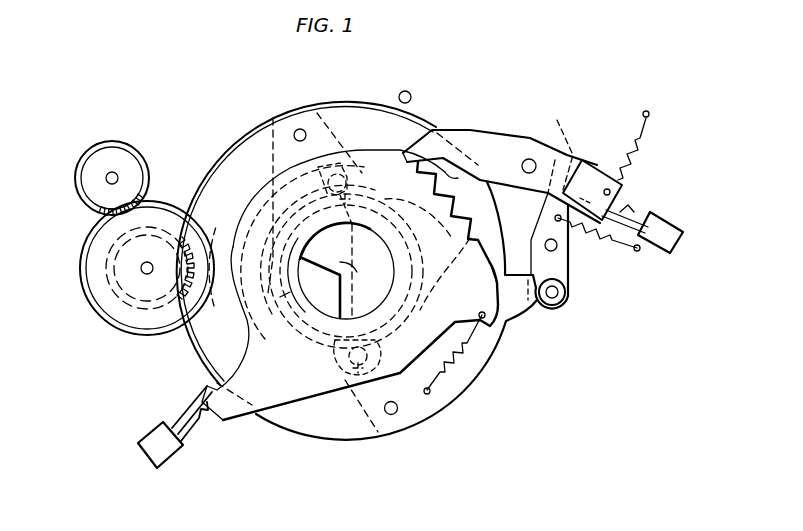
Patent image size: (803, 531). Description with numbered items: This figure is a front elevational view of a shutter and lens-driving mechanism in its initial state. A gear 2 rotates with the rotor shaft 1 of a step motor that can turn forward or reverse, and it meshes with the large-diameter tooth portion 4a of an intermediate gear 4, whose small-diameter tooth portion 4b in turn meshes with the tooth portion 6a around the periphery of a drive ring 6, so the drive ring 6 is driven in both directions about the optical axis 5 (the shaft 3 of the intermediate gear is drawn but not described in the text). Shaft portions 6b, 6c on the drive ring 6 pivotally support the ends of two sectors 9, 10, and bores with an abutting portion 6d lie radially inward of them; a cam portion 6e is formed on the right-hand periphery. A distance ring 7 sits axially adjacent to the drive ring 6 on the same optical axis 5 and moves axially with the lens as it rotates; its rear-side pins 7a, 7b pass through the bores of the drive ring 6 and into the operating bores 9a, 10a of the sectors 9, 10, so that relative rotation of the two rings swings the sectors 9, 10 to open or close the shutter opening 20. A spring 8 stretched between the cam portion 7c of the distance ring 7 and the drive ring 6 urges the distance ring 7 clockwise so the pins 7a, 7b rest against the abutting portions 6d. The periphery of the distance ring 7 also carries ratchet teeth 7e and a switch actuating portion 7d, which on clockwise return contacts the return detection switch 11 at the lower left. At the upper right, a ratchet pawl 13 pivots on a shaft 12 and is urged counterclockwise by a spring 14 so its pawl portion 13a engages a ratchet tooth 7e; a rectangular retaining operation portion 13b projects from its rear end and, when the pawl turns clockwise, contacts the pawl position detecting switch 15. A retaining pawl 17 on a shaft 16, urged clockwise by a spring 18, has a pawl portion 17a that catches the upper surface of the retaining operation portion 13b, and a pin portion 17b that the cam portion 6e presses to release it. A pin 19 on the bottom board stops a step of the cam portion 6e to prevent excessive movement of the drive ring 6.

The rotor shaft 1 is at (108, 175).
The gear 2 is at (133, 150).
The gear shaft 3 is at (143, 270).
The intermediate gear 4 is at (130, 330).
The large-diameter tooth portion 4a is at (93, 237).
The small-diameter tooth portion 4b is at (108, 321).
The optical axis 5 is at (345, 267).
The drive ring 6 is at (343, 428).
The tooth portion 6a is at (253, 135).
The shaft portion 6b is at (394, 415).
The shaft portion 6c is at (300, 127).
The abutting portion 6d is at (356, 190).
The cam portion 6e is at (517, 320).
The distance ring 7 is at (264, 405).
The pin 7a is at (400, 328).
The pin 7b is at (292, 206).
The cam portion 7c is at (486, 266).
The switch actuating portion 7d is at (230, 390).
The ratchet teeth 7e is at (482, 232).
The spring 8 is at (468, 368).
The sector 9 is at (292, 318).
The operating bore 9a is at (362, 257).
The sector 10 is at (398, 220).
The operating bore 10a is at (348, 355).
The return detection switch 11 is at (170, 452).
The shaft 12 is at (529, 158).
The ratchet pawl 13 is at (468, 143).
The pawl portion 13a is at (417, 140).
The retaining operation portion 13b is at (607, 188).
The spring 14 is at (647, 145).
The pawl position detecting switch 15 is at (670, 224).
The shaft 16 is at (557, 250).
The retaining pawl 17 is at (567, 283).
The pawl portion 17a is at (552, 144).
The pin portion 17b is at (557, 303).
The spring 18 is at (605, 255).
The pin 19 is at (402, 91).
The shutter opening 20 is at (266, 301).